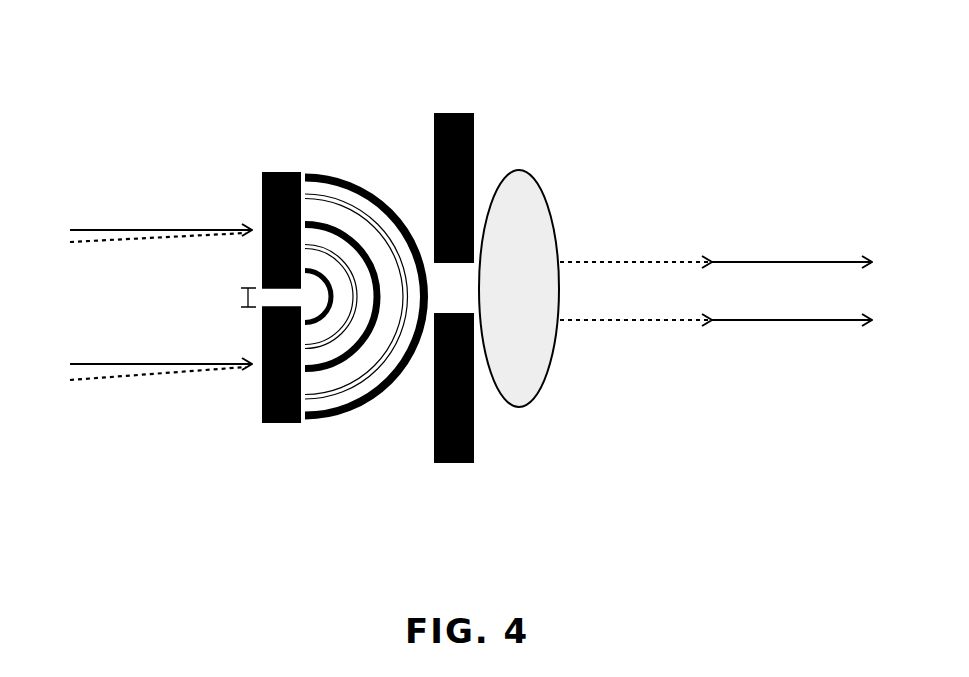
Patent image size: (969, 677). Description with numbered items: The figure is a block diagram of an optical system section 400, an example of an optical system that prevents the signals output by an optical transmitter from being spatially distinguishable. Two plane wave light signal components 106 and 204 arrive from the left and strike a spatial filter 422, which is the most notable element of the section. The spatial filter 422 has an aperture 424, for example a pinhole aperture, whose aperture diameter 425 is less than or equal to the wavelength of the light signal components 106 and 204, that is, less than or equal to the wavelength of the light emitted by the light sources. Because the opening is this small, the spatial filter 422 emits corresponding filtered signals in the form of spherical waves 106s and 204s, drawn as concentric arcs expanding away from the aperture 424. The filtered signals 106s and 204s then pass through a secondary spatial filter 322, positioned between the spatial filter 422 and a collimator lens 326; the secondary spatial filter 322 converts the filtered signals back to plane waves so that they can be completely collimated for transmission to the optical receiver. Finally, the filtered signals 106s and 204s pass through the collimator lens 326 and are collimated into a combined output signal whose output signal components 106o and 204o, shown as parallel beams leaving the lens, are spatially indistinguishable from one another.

The optical system section 400 is at (233, 65).
The light signal component 106 is at (137, 228).
The light signal component 204 is at (160, 382).
The spatial filter 422 is at (262, 422).
The aperture 424 is at (262, 310).
The aperture diameter 425 is at (240, 293).
The spherical wave 106s is at (388, 200).
The spherical wave 204s is at (325, 396).
The secondary spatial filter 322 is at (465, 110).
The collimator lens 326 is at (552, 193).
The output signal component 106o is at (808, 262).
The output signal component 204o is at (627, 322).